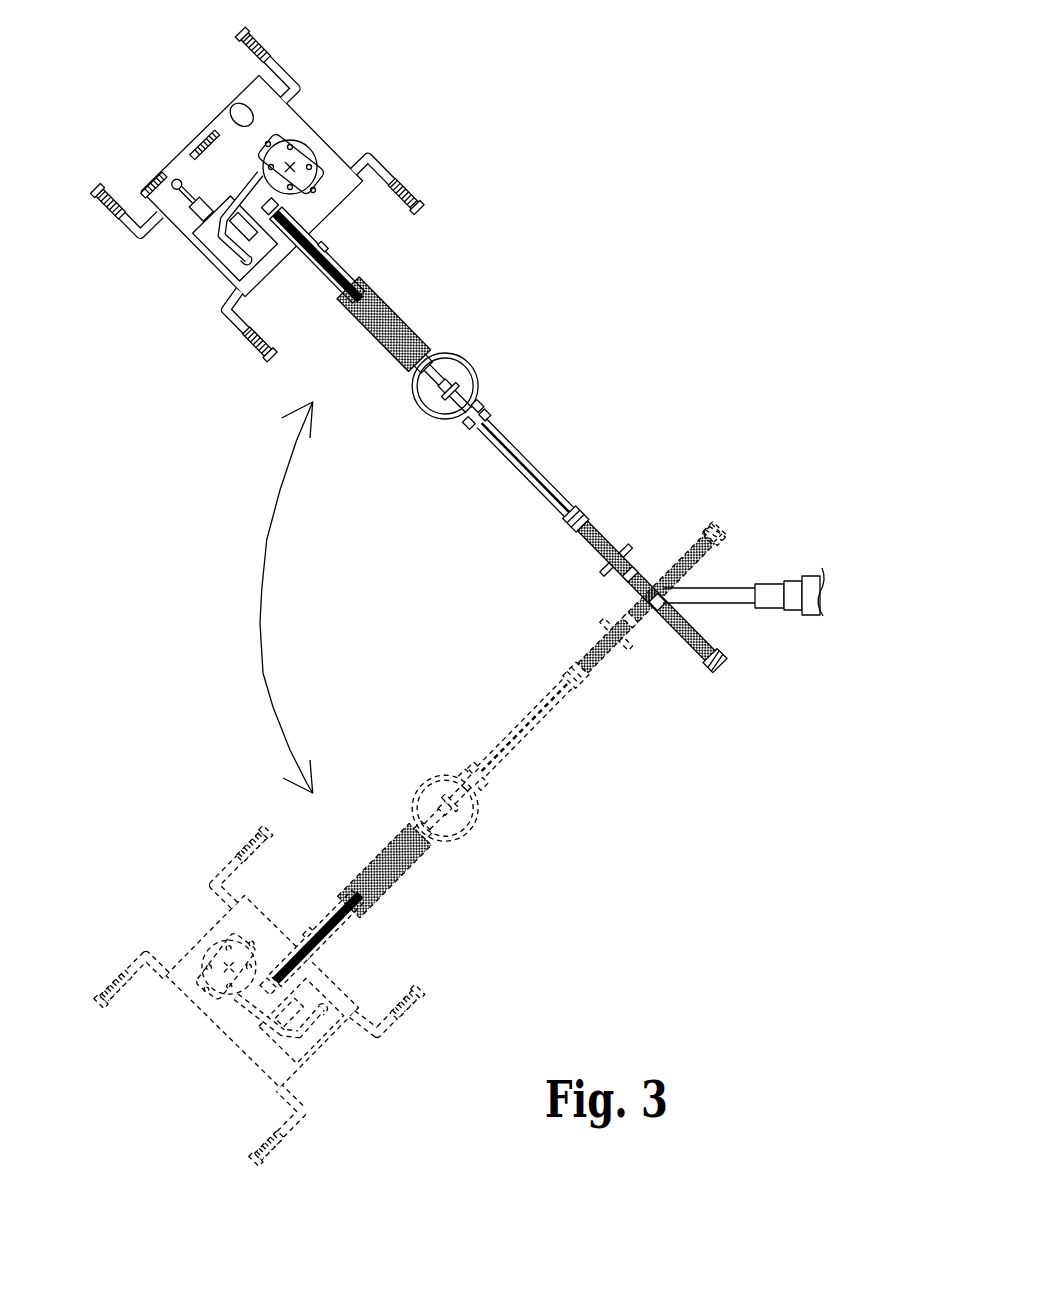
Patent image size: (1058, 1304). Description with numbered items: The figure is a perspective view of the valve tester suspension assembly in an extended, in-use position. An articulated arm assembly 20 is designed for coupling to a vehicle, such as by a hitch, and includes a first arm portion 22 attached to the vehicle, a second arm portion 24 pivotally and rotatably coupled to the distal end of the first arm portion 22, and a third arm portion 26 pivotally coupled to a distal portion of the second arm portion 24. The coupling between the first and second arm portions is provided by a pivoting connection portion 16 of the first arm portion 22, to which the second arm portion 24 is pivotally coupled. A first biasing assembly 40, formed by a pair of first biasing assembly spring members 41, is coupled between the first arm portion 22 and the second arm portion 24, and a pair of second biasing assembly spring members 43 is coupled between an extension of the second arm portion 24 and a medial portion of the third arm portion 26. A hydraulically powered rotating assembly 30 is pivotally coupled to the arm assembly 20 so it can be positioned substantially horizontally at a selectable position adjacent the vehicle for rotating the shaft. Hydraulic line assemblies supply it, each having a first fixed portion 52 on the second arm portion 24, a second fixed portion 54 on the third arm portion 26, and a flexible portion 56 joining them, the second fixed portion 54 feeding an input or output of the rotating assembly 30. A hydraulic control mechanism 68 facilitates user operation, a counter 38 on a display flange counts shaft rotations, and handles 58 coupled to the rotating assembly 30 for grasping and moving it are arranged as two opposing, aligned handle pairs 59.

The pivoting connection portion 16 is at (632, 588).
The articulated arm assembly 20 is at (483, 443).
The first arm portion 22 is at (713, 590).
The second arm portion 24 is at (514, 457).
The third arm portion 26 is at (307, 257).
The hydraulically powered rotating assembly 30 is at (292, 152).
The counter 38 is at (208, 133).
The first biasing assembly 40 is at (683, 528).
The first biasing assembly spring members 41 is at (655, 553).
The second biasing assembly spring members 43 is at (388, 303).
The first fixed portion 52 is at (496, 455).
The second fixed portion 54 is at (341, 268).
The flexible portion 56 is at (464, 360).
The handles 58 is at (273, 54).
The handle pairs 59 is at (364, 336).
The hydraulic control mechanism 68 is at (170, 178).